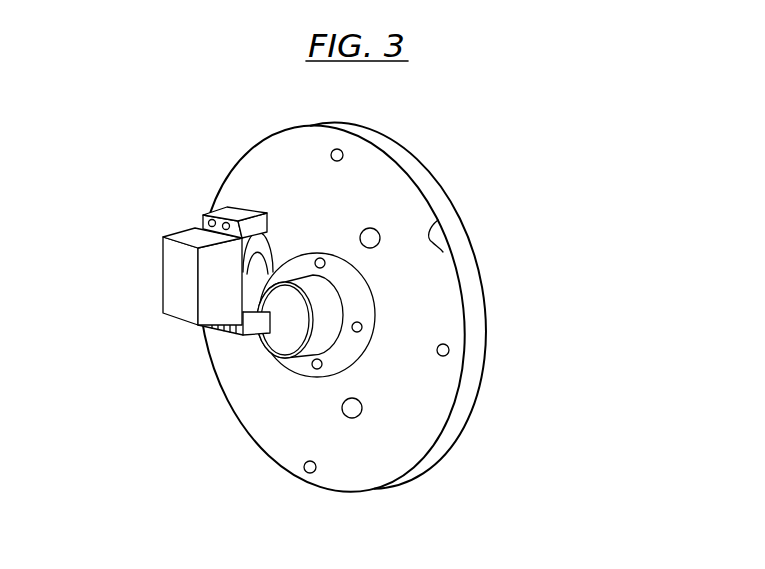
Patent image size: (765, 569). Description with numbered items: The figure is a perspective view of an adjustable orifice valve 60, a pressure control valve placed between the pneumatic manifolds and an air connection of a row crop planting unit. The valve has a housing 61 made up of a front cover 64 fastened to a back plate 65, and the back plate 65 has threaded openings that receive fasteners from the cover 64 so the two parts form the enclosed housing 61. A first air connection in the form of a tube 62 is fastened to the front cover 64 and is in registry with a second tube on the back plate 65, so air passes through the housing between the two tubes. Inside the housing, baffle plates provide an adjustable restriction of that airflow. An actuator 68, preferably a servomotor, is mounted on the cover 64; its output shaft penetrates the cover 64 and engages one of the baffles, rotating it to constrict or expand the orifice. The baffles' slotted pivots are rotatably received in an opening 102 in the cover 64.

The adjustable orifice valve 60 is at (337, 308).
The housing 61 is at (287, 188).
The tube 62 is at (295, 330).
The front cover 64 is at (438, 220).
The back plate 65 is at (485, 277).
The actuator 68 is at (156, 277).
The opening 102 is at (362, 233).